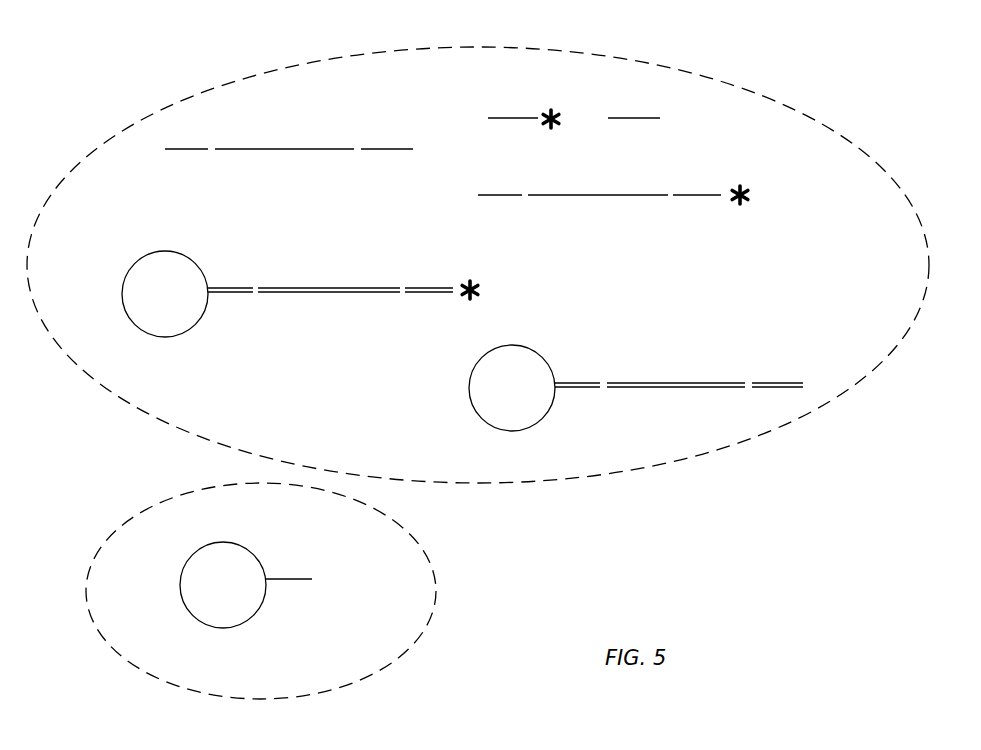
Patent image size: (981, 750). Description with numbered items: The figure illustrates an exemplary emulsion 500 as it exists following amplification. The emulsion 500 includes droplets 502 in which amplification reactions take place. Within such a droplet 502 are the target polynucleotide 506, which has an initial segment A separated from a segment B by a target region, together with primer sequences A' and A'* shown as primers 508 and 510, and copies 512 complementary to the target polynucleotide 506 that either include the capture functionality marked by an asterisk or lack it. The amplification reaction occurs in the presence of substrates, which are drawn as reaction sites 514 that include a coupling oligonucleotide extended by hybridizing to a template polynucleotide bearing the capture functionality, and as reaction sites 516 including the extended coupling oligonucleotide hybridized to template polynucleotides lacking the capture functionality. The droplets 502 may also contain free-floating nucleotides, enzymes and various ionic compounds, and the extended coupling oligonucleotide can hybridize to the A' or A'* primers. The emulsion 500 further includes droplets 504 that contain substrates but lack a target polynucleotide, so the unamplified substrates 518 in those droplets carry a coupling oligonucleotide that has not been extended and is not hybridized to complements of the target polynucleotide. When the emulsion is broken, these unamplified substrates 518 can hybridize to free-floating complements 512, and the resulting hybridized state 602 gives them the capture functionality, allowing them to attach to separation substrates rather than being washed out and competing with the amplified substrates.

The emulsion 500 is at (686, 547).
The droplets 502 is at (726, 86).
The droplets 504 is at (231, 698).
The target polynucleotide 506 is at (333, 135).
The primer sequence A'* 508 is at (507, 107).
The primer sequence A' 510 is at (624, 110).
The copies complementary to the target polynucleotide 512 is at (610, 220).
The reaction sites 514 is at (290, 252).
The reaction sites 516 is at (625, 353).
The unamplified substrates 518 is at (188, 535).
The hybridization of unamplified substrates to free-floating complements 602 is at (632, 749).